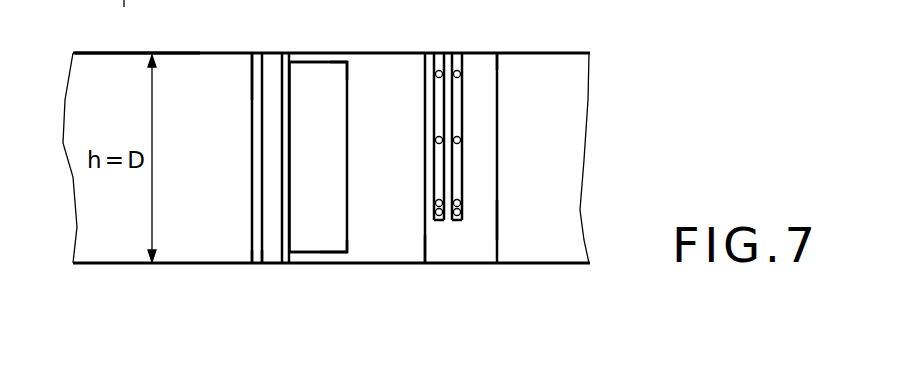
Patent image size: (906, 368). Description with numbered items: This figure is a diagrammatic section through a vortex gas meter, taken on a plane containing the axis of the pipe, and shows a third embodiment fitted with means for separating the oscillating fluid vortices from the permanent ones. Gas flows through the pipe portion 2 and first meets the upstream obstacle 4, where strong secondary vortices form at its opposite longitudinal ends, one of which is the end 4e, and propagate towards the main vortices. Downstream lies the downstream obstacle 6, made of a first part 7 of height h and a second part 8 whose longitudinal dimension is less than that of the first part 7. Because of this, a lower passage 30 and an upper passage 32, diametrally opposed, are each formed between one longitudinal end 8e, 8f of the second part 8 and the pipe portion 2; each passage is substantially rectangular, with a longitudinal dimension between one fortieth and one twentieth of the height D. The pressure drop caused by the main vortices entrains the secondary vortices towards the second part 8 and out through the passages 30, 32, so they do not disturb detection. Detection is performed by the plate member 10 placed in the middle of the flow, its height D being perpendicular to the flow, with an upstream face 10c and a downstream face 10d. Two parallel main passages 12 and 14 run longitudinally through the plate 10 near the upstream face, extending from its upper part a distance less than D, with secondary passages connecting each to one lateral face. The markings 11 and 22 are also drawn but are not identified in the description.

The pipe portion 2 is at (87, 53).
The upstream obstacle 4 is at (252, 87).
The longitudinal end of upstream obstacle 4e is at (257, 264).
The downstream obstacle 6 is at (296, 54).
The first part of downstream obstacle 7 is at (273, 53).
The second part of downstream obstacle 8 is at (346, 100).
The longitudinal end of second part 8e is at (327, 264).
The longitudinal end of second part 8f is at (337, 62).
The plate member 10 is at (487, 143).
The upstream face 10c is at (425, 240).
The downstream face 10d is at (500, 215).
The upper edge 11 is at (255, 53).
The main passage 12 is at (437, 179).
The main passage 14 is at (457, 108).
The upper portion 22 is at (444, 0).
The lower passage 30 is at (307, 264).
The upper passage 32 is at (315, 62).